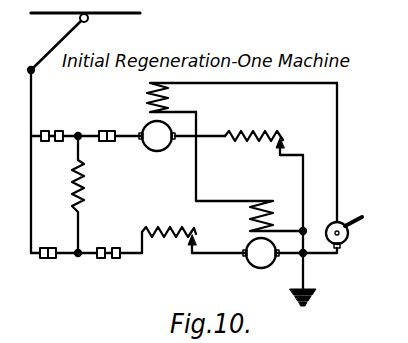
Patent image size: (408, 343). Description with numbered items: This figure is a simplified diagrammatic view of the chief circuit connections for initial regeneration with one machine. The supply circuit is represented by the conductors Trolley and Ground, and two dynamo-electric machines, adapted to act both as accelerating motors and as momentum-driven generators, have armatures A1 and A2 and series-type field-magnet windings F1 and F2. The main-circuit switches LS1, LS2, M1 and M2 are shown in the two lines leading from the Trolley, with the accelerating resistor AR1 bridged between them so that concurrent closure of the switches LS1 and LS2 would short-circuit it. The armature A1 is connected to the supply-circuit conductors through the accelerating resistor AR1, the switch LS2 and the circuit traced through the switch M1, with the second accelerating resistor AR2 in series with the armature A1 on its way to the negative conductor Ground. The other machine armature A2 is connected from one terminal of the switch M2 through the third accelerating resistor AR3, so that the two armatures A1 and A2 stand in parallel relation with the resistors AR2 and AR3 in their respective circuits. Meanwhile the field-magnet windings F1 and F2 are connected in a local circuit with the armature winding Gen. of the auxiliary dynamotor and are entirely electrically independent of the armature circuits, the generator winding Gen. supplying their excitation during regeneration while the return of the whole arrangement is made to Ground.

The supply-circuit conductor Trolley is at (90, 19).
The main-circuit switch LS1 is at (55, 128).
The main-circuit switch M1 is at (107, 131).
The armature A1 is at (157, 136).
The field-magnet winding F1 is at (168, 97).
The accelerating resistor AR1 is at (84, 190).
The second accelerating resistor AR2 is at (258, 126).
The third accelerating resistor AR3 is at (165, 225).
The field-magnet winding F2 is at (250, 208).
The armature A2 is at (261, 253).
The generator armature winding Gen is at (348, 240).
The main-circuit switch LS2 is at (46, 259).
The main-circuit switch M2 is at (108, 259).
The supply-circuit conductor Ground is at (314, 298).